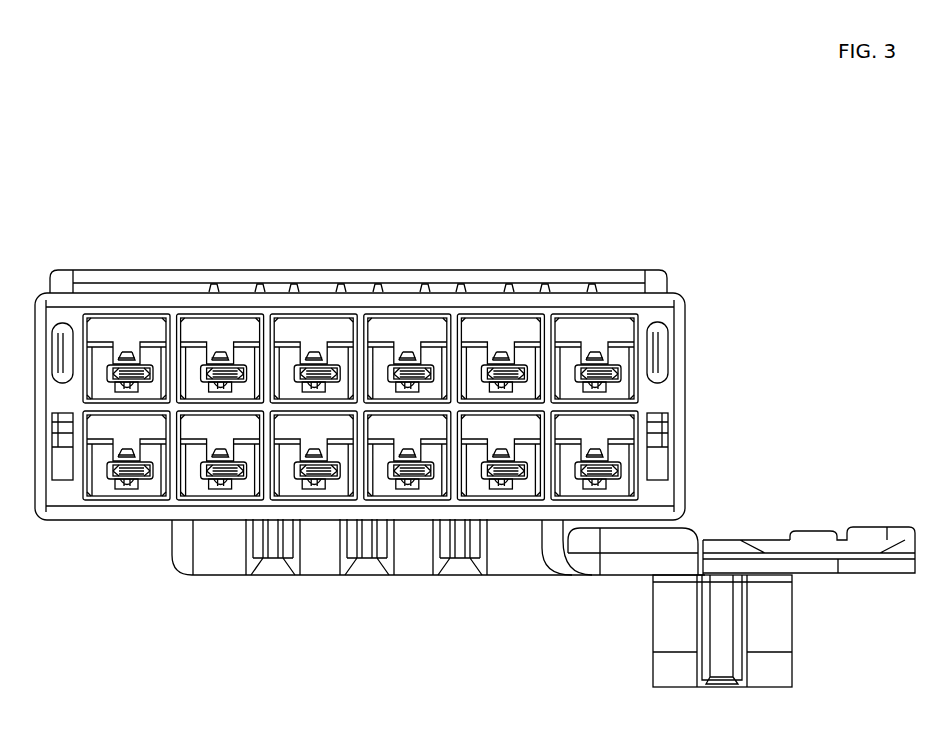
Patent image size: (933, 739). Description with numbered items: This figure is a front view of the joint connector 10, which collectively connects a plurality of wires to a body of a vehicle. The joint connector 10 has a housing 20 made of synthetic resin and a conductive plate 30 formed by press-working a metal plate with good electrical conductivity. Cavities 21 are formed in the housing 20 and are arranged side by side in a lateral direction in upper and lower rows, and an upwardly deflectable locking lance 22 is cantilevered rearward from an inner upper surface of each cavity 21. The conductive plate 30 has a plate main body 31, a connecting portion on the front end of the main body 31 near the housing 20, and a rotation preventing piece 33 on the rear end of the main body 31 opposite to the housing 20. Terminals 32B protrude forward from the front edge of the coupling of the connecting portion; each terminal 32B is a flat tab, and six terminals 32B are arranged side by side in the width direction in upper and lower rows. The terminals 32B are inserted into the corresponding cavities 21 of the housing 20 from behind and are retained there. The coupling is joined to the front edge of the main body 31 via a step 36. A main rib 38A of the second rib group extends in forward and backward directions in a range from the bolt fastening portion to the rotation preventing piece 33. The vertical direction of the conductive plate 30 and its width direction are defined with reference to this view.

The joint connector 10 is at (359, 148).
The housing 20 is at (476, 248).
The cavity 21 is at (530, 350).
The locking lance 22 is at (498, 360).
The terminal 32B is at (596, 372).
The conductive plate 30 is at (429, 609).
The plate main body 31 is at (505, 575).
The rotation preventing piece 33 is at (792, 617).
The step 36 is at (208, 535).
The main rib 38A is at (728, 632).